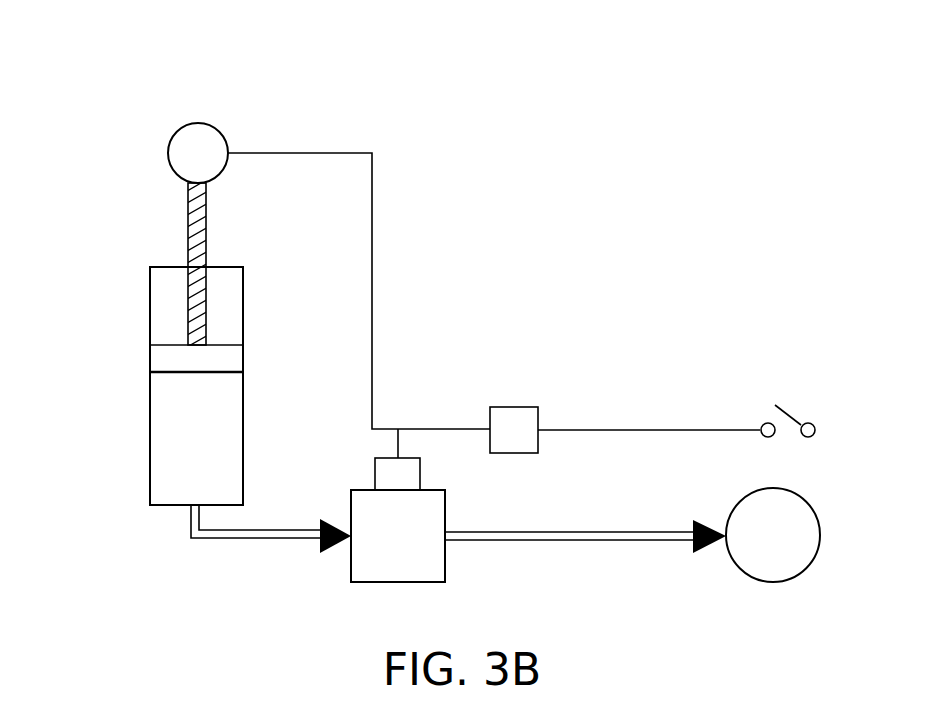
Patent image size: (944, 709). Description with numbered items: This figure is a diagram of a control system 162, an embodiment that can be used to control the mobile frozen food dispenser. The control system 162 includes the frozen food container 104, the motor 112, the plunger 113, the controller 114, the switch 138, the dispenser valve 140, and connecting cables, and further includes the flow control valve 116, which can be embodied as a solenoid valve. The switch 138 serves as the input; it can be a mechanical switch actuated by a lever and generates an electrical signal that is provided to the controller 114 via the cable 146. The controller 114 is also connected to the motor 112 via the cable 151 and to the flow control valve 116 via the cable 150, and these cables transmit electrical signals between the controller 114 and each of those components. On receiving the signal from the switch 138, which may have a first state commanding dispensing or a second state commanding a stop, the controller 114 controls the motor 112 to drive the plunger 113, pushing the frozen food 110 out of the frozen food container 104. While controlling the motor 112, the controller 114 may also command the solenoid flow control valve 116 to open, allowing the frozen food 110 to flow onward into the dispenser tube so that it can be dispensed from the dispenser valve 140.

The control system 162 is at (88, 124).
The motor 112 is at (156, 232).
The frozen food container 104 is at (148, 408).
The plunger 113 is at (152, 360).
The frozen food 110 is at (216, 455).
The cable 151 is at (349, 153).
The cable 150 is at (398, 432).
The controller 114 is at (520, 407).
The cable 146 is at (625, 430).
The switch 138 is at (777, 380).
The flow control valve 116 is at (397, 583).
The dispenser valve 140 is at (788, 582).